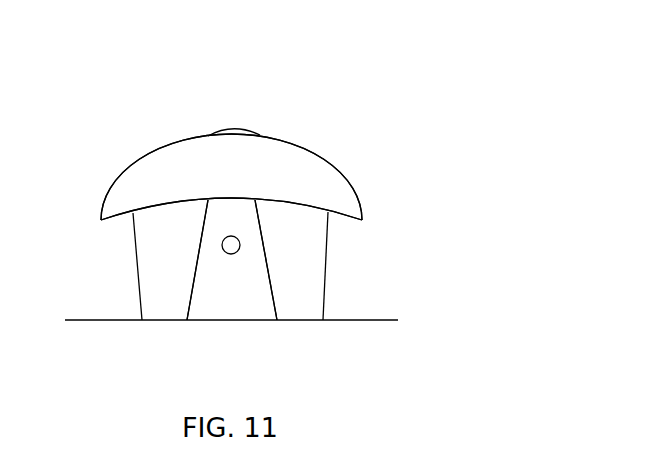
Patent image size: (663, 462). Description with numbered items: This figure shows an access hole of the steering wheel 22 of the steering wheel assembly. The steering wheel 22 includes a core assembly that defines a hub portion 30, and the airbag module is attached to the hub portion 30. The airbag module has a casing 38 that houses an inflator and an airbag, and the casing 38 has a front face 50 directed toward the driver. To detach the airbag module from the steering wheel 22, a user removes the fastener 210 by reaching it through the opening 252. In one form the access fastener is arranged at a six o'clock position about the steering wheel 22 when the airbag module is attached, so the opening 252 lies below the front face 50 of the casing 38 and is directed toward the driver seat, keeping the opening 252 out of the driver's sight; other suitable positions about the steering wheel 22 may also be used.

The steering wheel 22 is at (433, 102).
The hub portion 30 is at (365, 195).
The casing 38 is at (148, 165).
The front face 50 is at (310, 147).
The fastener 210 is at (231, 265).
The opening 252 is at (240, 244).